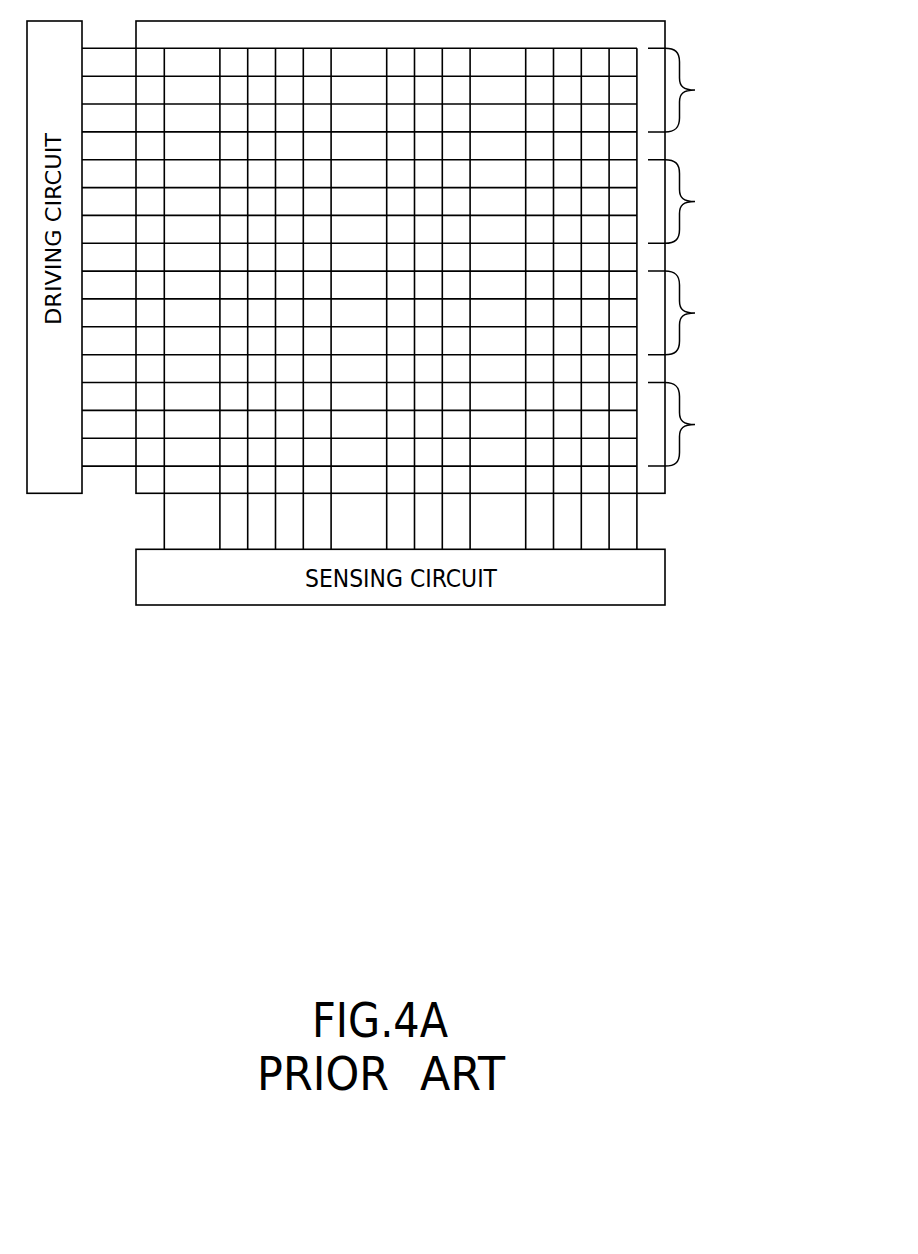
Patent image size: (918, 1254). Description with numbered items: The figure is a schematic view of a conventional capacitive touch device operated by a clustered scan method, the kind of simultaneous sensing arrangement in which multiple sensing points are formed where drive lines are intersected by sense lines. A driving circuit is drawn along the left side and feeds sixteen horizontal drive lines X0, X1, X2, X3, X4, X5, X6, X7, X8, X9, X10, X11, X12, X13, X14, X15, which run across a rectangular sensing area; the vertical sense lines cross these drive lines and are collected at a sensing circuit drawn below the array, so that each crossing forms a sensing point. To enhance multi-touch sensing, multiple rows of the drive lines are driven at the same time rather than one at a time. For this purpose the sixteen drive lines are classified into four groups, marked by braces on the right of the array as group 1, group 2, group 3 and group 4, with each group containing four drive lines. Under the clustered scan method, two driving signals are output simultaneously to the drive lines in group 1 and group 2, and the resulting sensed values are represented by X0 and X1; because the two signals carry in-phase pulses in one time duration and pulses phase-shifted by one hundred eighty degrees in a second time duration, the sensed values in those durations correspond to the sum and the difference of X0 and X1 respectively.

The drive line X0 is at (359, 34).
The drive line X1 is at (359, 62).
The drive line X2 is at (359, 90).
The drive line X3 is at (359, 118).
The drive line X4 is at (359, 146).
The drive line X5 is at (359, 174).
The drive line X6 is at (359, 201).
The drive line X7 is at (359, 229).
The drive line X8 is at (359, 257).
The drive line X9 is at (359, 285).
The drive line X10 is at (359, 313).
The drive line X11 is at (359, 341).
The drive line X12 is at (359, 369).
The drive line X13 is at (359, 396).
The drive line X14 is at (359, 424).
The drive line X15 is at (359, 452).
The group 1 is at (725, 90).
The group 2 is at (725, 202).
The group 3 is at (725, 313).
The group 4 is at (725, 425).